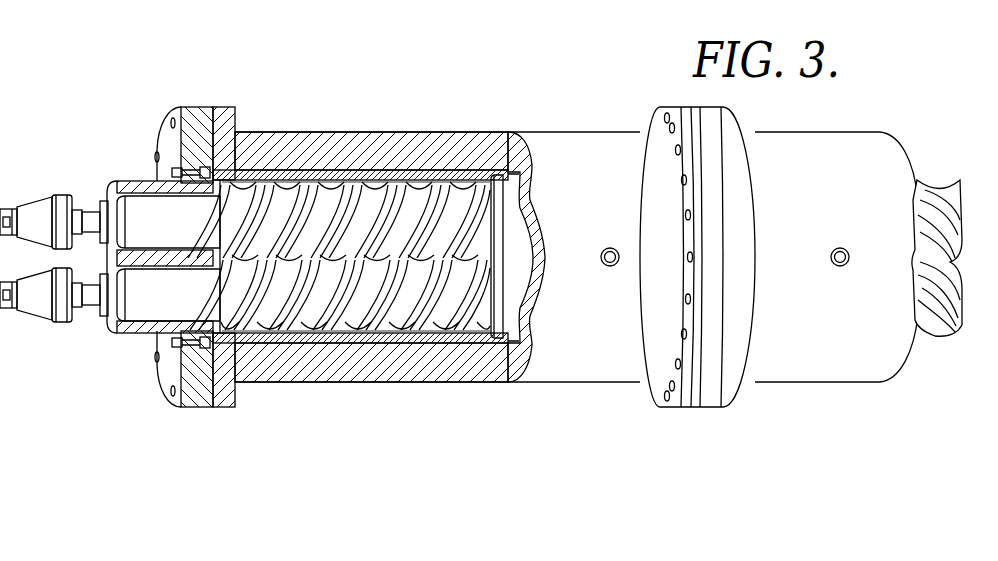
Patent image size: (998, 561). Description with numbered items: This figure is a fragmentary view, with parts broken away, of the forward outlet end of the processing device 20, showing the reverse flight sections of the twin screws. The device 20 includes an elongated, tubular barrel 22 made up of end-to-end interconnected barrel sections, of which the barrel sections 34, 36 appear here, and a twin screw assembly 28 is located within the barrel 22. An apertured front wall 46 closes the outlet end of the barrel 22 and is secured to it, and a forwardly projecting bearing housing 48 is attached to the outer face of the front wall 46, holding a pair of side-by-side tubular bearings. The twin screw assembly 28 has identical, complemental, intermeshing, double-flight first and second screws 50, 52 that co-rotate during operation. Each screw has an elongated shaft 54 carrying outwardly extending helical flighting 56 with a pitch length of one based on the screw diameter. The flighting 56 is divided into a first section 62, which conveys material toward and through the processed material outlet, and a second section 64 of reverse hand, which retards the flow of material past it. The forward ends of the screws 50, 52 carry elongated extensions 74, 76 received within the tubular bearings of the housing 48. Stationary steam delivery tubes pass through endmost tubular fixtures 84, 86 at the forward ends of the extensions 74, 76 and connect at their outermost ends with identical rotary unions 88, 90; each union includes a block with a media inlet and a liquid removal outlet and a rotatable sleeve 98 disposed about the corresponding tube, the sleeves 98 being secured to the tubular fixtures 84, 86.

The processing device 20 is at (864, 94).
The barrel 22 is at (798, 388).
The twin screw assembly 28 is at (504, 212).
The barrel section 34 is at (883, 161).
The barrel section 36 is at (617, 148).
The front wall 46 is at (167, 377).
The bearing housing 48 is at (157, 177).
The first screw 50 is at (469, 348).
The second screw 52 is at (484, 179).
The shaft 54 is at (403, 203).
The helical flighting 56 is at (263, 185).
The first flighting section 62 is at (494, 186).
The second flighting section 64 is at (281, 173).
The extension 74 is at (138, 308).
The extension 76 is at (138, 207).
The tubular fixture 84 is at (100, 313).
The tubular fixture 86 is at (100, 213).
The rotary union 88 is at (22, 321).
The rotary union 90 is at (22, 195).
The rotatable sleeve 98 is at (90, 290).